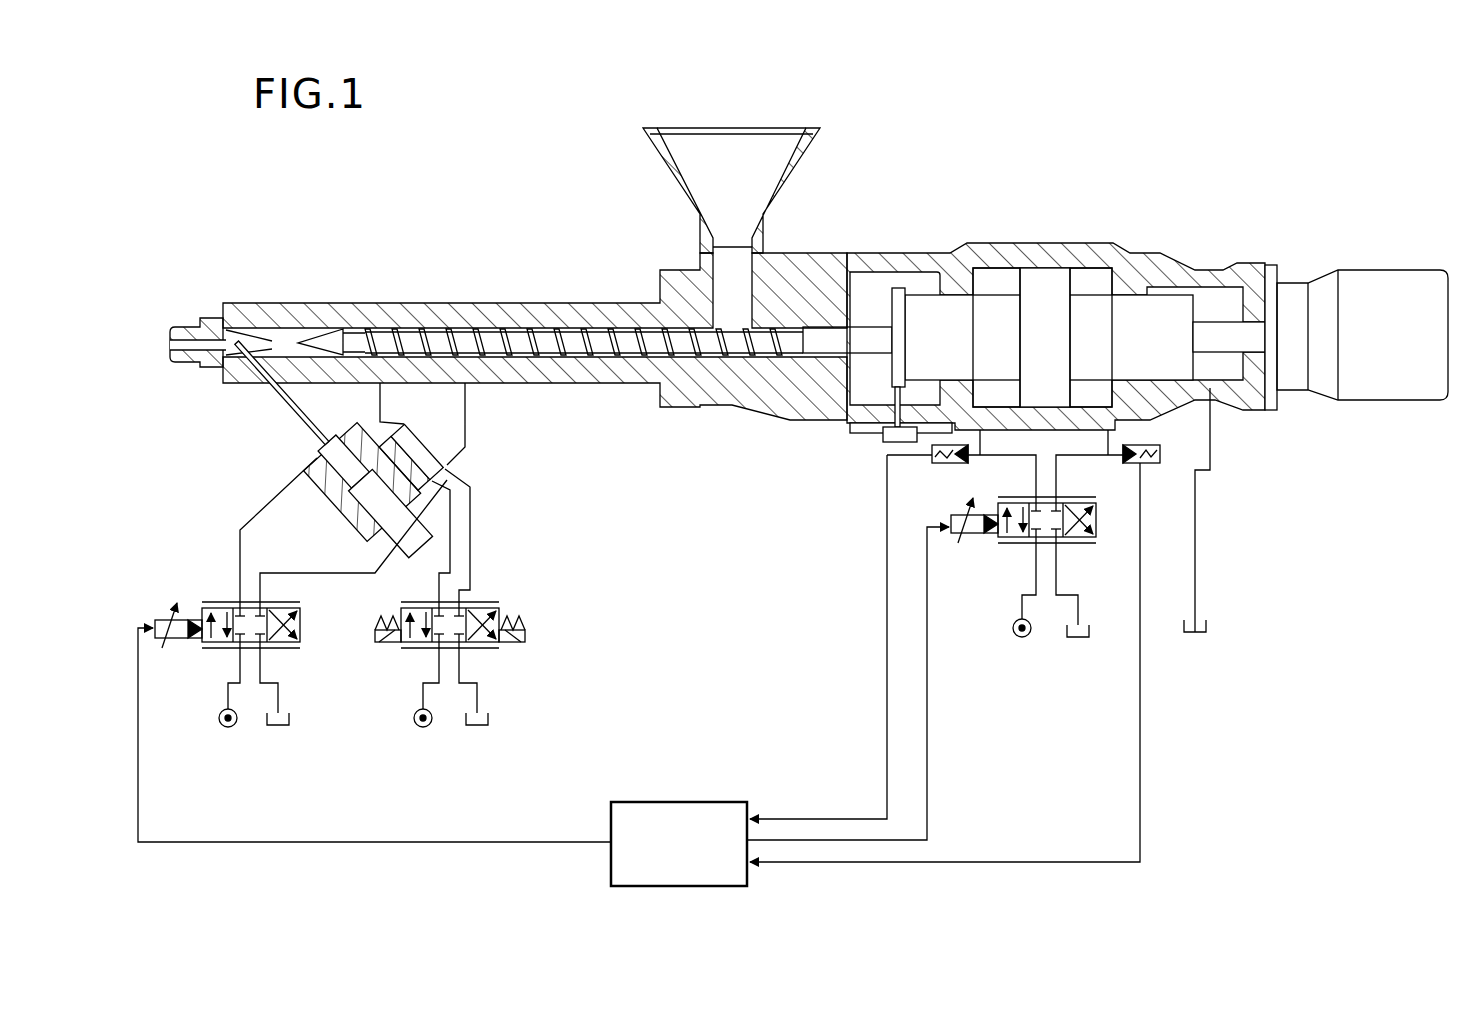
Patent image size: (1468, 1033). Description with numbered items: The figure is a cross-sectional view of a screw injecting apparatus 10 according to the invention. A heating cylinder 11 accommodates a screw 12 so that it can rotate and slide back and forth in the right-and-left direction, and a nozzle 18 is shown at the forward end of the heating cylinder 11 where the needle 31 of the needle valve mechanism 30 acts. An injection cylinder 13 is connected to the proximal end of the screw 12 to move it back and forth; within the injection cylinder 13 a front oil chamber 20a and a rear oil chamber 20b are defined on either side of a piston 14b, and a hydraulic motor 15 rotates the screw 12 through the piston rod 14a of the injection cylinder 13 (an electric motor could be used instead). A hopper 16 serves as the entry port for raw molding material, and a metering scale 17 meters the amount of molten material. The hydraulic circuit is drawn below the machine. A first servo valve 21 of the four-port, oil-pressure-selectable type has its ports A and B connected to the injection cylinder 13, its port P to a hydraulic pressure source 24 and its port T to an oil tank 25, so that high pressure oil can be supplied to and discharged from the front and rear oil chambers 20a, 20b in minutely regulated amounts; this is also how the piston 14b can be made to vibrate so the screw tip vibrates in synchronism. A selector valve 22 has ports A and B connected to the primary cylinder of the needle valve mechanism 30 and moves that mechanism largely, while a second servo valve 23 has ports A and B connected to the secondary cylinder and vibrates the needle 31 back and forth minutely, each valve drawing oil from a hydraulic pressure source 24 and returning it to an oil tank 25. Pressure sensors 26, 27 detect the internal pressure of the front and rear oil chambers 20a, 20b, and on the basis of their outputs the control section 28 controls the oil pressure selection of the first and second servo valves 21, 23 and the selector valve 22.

The screw injecting apparatus 10 is at (1250, 738).
The heating cylinder 11 is at (545, 303).
The screw 12 is at (470, 343).
The injection cylinder 13 is at (1033, 252).
The piston rod 14a is at (1162, 270).
The piston 14b is at (1045, 288).
The hydraulic motor 15 is at (1380, 270).
The hopper 16 is at (808, 150).
The metering scale 17 is at (883, 443).
The nozzle 18 is at (188, 326).
The front oil chamber 20a is at (988, 285).
The rear oil chamber 20b is at (1083, 285).
The first servo valve 21 is at (1007, 552).
The selector valve 22 is at (495, 592).
The second servo valve 23 is at (218, 578).
The hydraulic pressure source 24 is at (227, 728).
The oil tank 25 is at (281, 727).
The pressure sensor 26 is at (1155, 465).
The pressure sensor 27 is at (942, 464).
The control section 28 is at (678, 802).
The needle valve mechanism 30 is at (292, 440).
The needle 31 is at (230, 383).